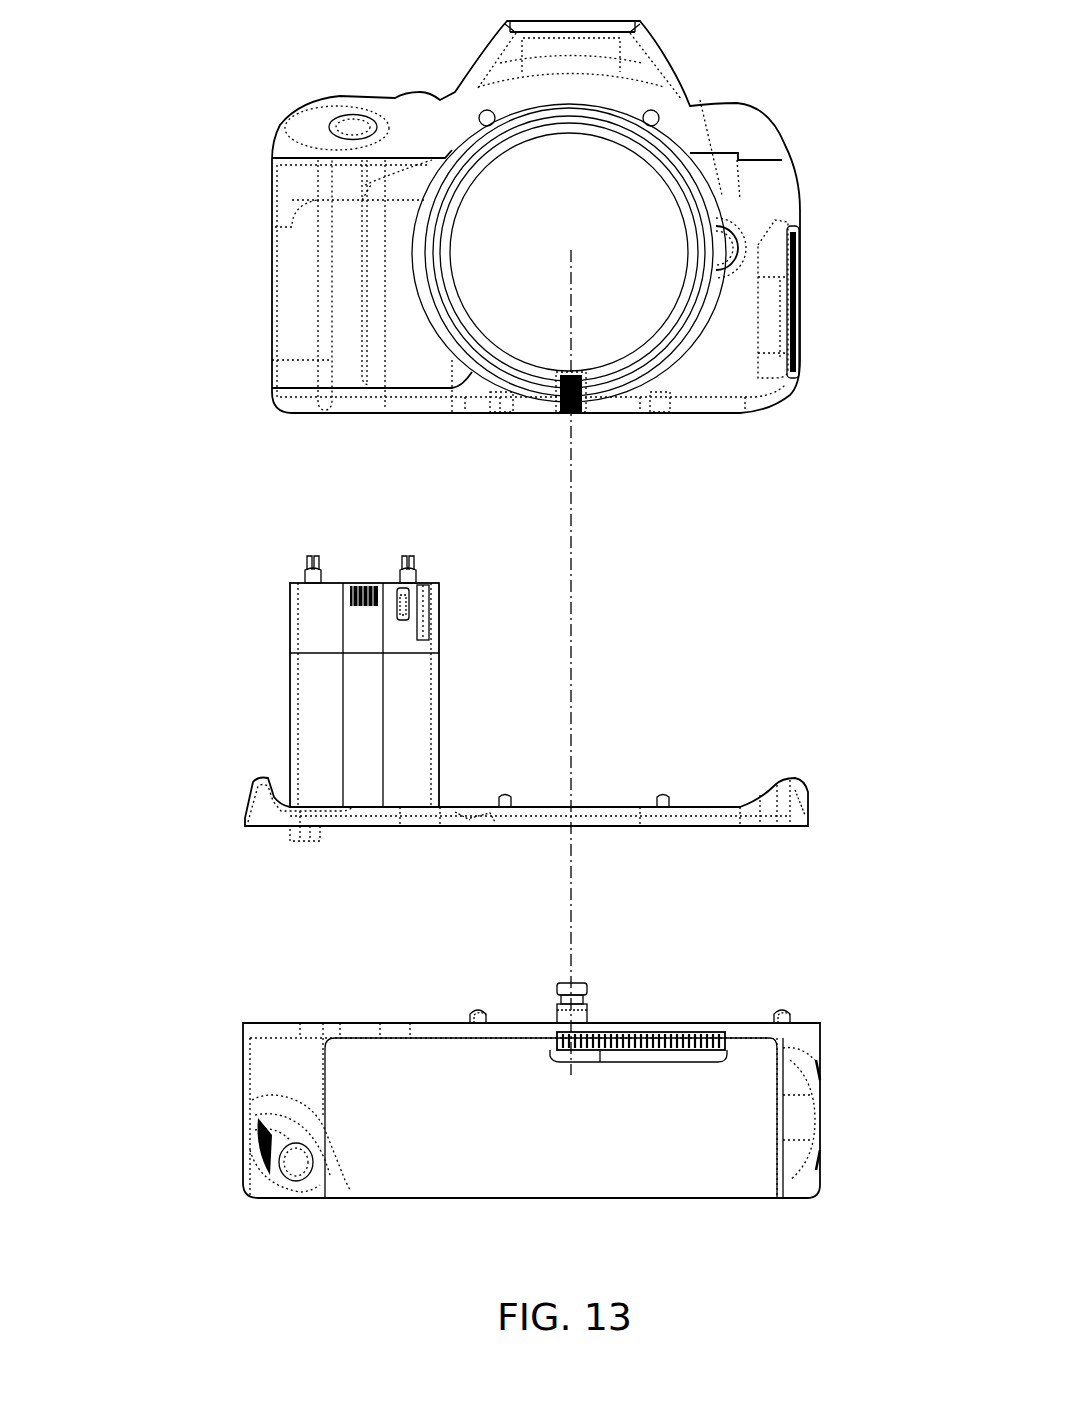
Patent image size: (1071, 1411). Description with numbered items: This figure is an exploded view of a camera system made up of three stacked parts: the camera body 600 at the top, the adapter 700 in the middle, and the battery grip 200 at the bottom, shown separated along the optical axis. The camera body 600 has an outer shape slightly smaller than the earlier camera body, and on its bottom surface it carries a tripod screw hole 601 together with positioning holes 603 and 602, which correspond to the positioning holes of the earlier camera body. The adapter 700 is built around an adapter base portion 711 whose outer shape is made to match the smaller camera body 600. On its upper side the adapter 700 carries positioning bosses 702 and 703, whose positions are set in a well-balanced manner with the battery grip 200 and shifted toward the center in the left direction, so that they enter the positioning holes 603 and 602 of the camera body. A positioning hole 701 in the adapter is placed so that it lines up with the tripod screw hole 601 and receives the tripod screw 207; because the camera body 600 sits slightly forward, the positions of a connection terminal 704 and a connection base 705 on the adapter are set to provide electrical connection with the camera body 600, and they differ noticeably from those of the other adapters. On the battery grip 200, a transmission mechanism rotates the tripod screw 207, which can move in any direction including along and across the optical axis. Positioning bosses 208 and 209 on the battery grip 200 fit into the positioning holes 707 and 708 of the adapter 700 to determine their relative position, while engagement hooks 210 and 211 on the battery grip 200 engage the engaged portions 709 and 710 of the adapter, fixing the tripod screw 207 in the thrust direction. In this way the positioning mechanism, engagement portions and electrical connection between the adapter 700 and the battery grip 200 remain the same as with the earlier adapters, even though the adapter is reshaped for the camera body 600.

The camera body 600 is at (740, 104).
The tripod screw hole 601 is at (575, 413).
The positioning hole 602 is at (665, 413).
The positioning hole 603 is at (503, 413).
The adapter 700 is at (795, 780).
The positioning hole 701 is at (575, 807).
The positioning boss 702 is at (672, 797).
The positioning boss 703 is at (505, 795).
The connection terminal 704 is at (410, 552).
The connection base 705 is at (300, 693).
The positioning hole 707 is at (775, 828).
The positioning hole 708 is at (495, 824).
The engaged portion 709 is at (800, 826).
The engaged portion 710 is at (465, 815).
The adapter base portion 711 is at (272, 812).
The battery grip 200 is at (685, 1158).
The tripod screw 207 is at (585, 1003).
The positioning boss 208 is at (782, 1018).
The positioning boss 209 is at (487, 1018).
The engagement hook 210 is at (470, 1010).
The engagement hook 211 is at (795, 1012).